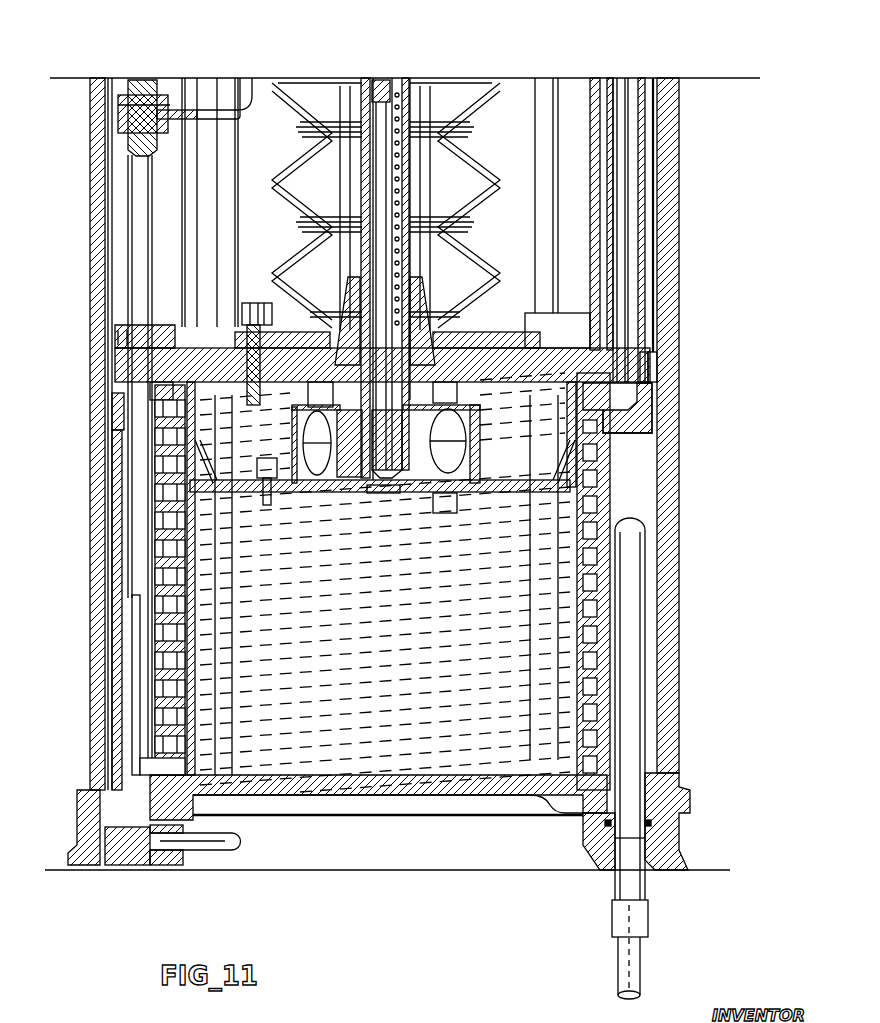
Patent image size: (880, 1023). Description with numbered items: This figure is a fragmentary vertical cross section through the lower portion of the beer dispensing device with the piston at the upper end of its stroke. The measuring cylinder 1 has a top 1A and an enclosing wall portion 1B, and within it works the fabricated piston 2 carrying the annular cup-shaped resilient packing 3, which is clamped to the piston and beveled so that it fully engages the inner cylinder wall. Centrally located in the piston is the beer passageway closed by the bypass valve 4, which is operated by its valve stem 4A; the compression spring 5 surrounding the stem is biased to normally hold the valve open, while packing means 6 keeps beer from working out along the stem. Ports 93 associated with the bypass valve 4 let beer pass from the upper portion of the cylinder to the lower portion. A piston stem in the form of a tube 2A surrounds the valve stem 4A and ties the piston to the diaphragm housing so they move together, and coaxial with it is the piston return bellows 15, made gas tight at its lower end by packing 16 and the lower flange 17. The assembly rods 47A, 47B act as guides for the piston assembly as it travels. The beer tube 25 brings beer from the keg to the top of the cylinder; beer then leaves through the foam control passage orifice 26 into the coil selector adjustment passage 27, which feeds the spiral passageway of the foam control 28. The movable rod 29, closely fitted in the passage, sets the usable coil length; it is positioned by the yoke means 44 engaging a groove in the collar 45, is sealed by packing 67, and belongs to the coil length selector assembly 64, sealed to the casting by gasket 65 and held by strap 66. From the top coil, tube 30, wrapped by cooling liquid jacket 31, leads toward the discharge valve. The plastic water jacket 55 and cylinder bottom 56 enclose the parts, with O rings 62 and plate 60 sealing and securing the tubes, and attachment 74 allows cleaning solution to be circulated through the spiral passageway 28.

The measuring cylinder 1 is at (580, 763).
The top of measuring cylinder 1A is at (600, 372).
The enclosing wall portion 1B is at (607, 493).
The fabricated piston 2 is at (332, 490).
The piston stem tube 2A is at (364, 78).
The annular cup-shaped resilient packing 3 is at (577, 465).
The closure or bypass valve 4 is at (392, 478).
The valve stem 4A is at (398, 90).
The compression spring 5 is at (405, 212).
The packing means 6 is at (410, 470).
The piston return bellows 15 is at (288, 105).
The packing 16 is at (450, 333).
The lower flange 17 is at (540, 345).
The beer tube 25 is at (628, 745).
The foam control passage orifice 26 is at (175, 770).
The coil selector adjustment passage 27 is at (140, 738).
The foam control 28 is at (172, 640).
The movable rod 29 is at (137, 245).
The tube 30 is at (630, 186).
The cooling liquid jacket 31 is at (648, 232).
The yoke means 44 is at (225, 112).
The collar 45 is at (124, 117).
The assembly rod 47A is at (222, 143).
The assembly rod 47B is at (537, 95).
The water jacket 55 is at (665, 628).
The cylinder bottom 56 is at (330, 790).
The positioning and securing plate 60 is at (605, 835).
The O rings 62 is at (665, 818).
The coil length adjustor or selector assembly 64 is at (120, 516).
The gasket 65 is at (150, 383).
The strap 66 is at (113, 415).
The packing 67 is at (118, 343).
The cleaning attachment 74 is at (140, 858).
The ports 93 is at (455, 455).